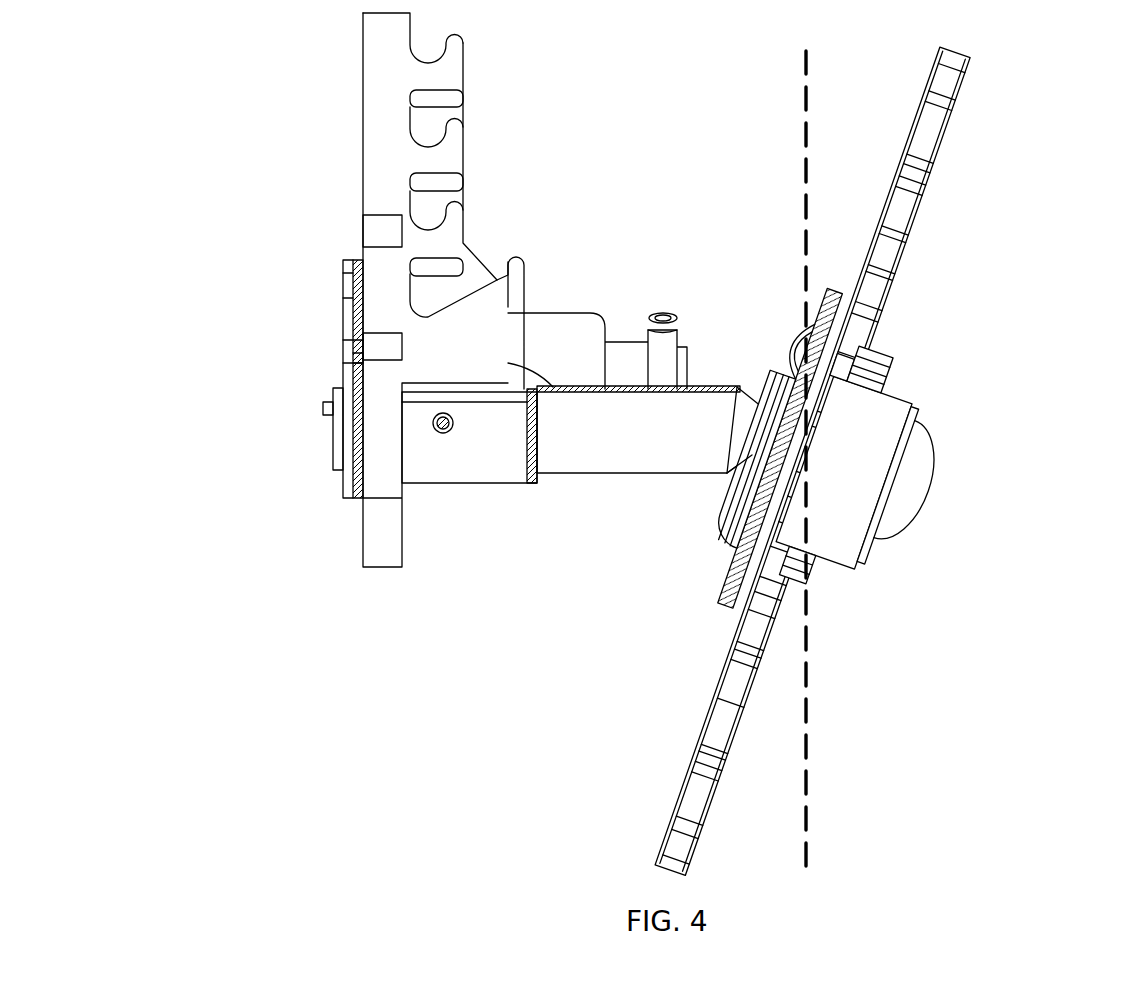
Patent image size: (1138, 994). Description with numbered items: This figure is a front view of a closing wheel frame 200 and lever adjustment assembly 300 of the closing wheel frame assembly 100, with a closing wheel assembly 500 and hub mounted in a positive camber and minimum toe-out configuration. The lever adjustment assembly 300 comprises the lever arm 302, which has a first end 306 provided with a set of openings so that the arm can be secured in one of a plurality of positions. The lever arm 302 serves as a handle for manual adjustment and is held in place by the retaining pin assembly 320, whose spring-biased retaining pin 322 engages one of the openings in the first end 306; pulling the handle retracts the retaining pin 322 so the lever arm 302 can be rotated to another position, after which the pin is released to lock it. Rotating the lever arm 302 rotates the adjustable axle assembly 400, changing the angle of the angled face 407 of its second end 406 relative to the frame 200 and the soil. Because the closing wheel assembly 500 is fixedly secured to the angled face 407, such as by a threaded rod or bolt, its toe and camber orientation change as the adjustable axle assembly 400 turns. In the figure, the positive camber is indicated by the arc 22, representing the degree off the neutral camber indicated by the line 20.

The closing wheel frame assembly 100 is at (268, 759).
The closing wheel frame 200 is at (337, 197).
The lever adjustment assembly 300 is at (255, 430).
The lever arm 302 is at (356, 360).
The first end 306 is at (343, 278).
The retaining pin assembly 320 is at (529, 340).
The retaining pin 322 is at (322, 412).
The adjustable axle assembly 400 is at (543, 504).
The second end 406 is at (767, 444).
The angled face 407 is at (730, 464).
The closing wheel assembly 500 is at (867, 469).
The line 20 is at (818, 716).
The arc 22 is at (812, 461).